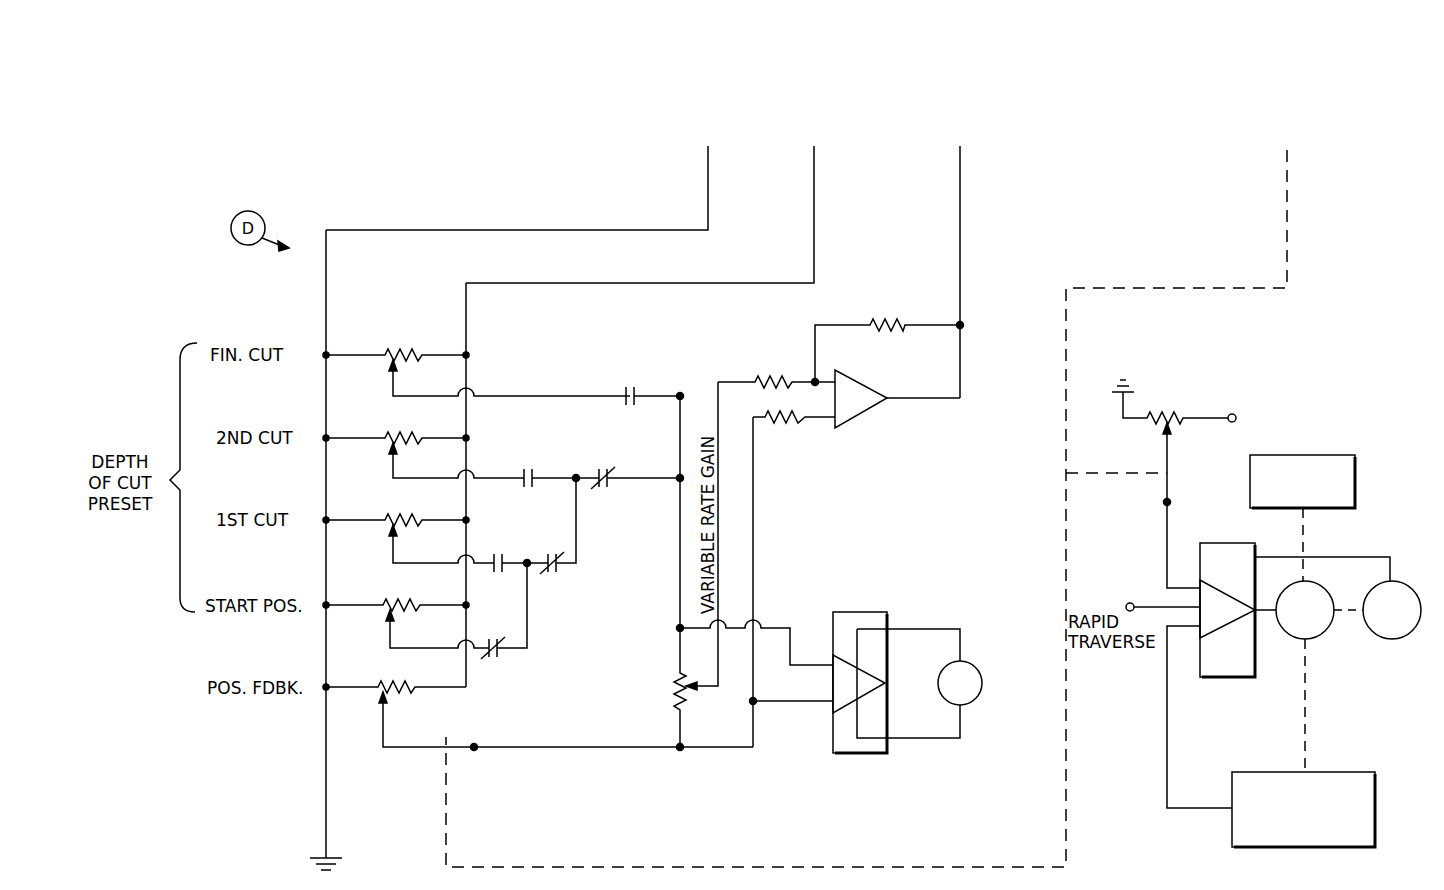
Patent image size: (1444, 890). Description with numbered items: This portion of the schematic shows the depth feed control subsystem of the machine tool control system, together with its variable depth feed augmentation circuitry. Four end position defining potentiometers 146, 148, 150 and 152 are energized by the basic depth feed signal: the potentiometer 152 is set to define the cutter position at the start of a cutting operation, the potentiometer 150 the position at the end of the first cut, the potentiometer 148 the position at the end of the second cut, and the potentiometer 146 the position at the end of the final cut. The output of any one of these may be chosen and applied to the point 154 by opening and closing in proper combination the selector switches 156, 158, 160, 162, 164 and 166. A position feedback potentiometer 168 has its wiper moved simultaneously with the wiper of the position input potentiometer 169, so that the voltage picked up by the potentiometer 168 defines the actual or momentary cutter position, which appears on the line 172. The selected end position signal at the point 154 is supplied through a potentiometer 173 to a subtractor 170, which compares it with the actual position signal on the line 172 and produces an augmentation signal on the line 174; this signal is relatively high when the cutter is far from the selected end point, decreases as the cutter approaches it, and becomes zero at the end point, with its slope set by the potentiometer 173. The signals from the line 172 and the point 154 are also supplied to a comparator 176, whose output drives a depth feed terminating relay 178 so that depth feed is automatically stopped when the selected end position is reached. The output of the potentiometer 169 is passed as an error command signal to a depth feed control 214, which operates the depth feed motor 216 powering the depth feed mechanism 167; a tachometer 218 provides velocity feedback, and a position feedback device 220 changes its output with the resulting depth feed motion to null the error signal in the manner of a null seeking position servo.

The end position defining potentiometer 146 is at (404, 352).
The end position defining potentiometer 148 is at (404, 435).
The end position defining potentiometer 150 is at (404, 517).
The end position defining potentiometer 152 is at (402, 602).
The point 154 is at (676, 392).
The selector switch 156 is at (498, 655).
The selector switch 158 is at (557, 570).
The selector switch 160 is at (608, 470).
The selector switch 162 is at (503, 555).
The selector switch 164 is at (533, 470).
The selector switch 166 is at (647, 384).
The depth feed mechanism 167 is at (1310, 455).
The position feedback potentiometer 168 is at (398, 684).
The position input potentiometer 169 is at (1167, 414).
The subtractor 170 is at (839, 373).
The line 172 is at (522, 750).
The potentiometer 173 is at (675, 698).
The line 174 is at (962, 252).
The comparator 176 is at (855, 612).
The depth feed terminating relay 178 is at (975, 666).
The depth feed control 214 is at (1258, 675).
The depth feed motor 216 is at (1319, 676).
The tachometer 218 is at (1392, 610).
The position feedback device 220 is at (1330, 772).